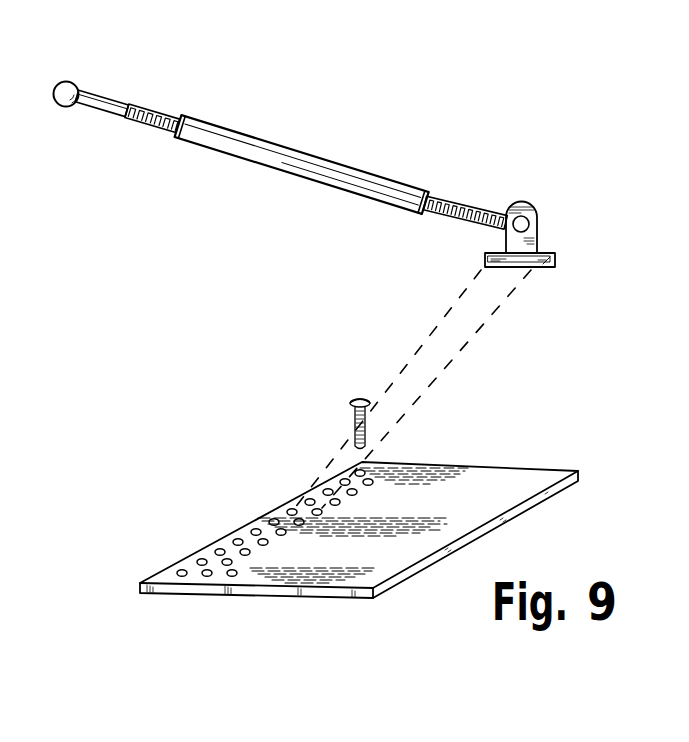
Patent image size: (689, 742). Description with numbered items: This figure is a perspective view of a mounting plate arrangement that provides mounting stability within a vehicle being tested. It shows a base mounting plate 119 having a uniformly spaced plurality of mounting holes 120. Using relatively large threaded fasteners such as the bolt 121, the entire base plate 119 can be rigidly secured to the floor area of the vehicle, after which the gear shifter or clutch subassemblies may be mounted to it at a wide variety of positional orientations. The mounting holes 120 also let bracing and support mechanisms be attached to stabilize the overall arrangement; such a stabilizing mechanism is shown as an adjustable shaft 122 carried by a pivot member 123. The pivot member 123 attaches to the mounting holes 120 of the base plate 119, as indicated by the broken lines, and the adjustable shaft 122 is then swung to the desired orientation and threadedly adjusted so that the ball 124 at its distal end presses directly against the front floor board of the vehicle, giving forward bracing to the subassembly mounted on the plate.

The base mounting plate 119 is at (513, 477).
The mounting holes 120 is at (203, 558).
The bolt 121 is at (359, 399).
The adjustable shaft 122 is at (318, 161).
The pivot member 123 is at (537, 212).
The ball 124 is at (76, 83).